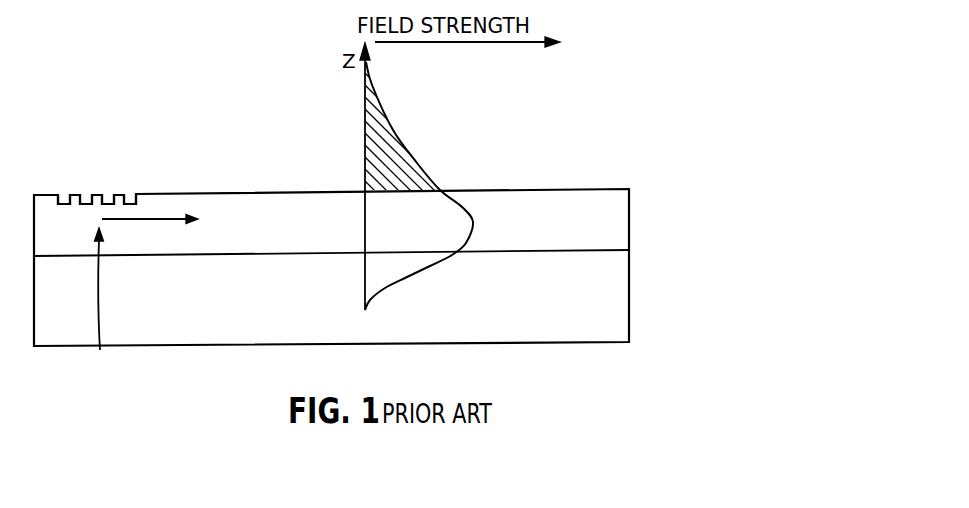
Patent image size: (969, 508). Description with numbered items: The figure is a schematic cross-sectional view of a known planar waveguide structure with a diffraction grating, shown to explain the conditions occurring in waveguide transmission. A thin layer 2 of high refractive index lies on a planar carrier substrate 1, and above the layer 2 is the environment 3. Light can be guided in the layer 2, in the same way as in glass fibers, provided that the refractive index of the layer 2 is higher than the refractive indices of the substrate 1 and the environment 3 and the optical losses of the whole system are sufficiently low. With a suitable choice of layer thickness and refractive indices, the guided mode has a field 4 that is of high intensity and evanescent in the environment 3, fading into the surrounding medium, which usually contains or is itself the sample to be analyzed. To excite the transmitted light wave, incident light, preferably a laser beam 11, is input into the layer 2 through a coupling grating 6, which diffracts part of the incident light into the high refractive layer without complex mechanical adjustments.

The substrate 1 is at (231, 171).
The layer 2 is at (612, 222).
The environment 3 is at (593, 147).
The field 4 is at (398, 133).
The coupling grating 6 is at (88, 195).
The laser beam 11 is at (146, 304).